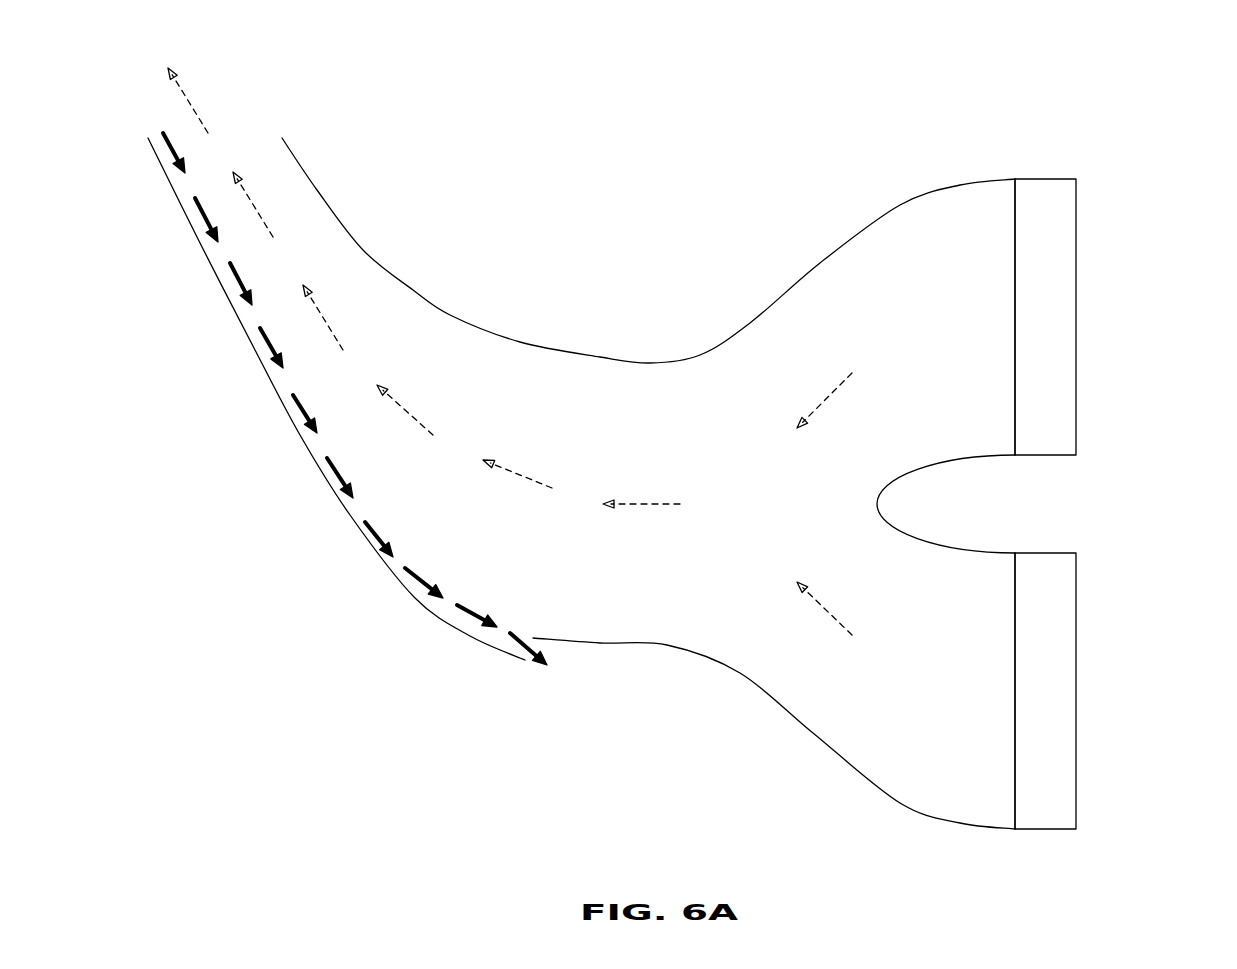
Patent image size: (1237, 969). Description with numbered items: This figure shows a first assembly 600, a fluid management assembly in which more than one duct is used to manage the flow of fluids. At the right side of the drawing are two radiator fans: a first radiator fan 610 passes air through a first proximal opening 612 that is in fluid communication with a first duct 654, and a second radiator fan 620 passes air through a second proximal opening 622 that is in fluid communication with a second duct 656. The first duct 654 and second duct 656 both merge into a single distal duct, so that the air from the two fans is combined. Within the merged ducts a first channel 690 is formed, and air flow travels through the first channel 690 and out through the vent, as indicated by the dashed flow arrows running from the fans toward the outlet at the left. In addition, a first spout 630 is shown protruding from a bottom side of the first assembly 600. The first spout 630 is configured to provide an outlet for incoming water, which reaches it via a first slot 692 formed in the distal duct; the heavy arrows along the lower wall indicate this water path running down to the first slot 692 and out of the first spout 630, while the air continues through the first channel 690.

The first assembly 600 is at (492, 110).
The first duct 654 is at (937, 177).
The second duct 656 is at (662, 678).
The first radiator fan 610 is at (1076, 305).
The first proximal opening 612 is at (1015, 258).
The second radiator fan 620 is at (1076, 703).
The second proximal opening 622 is at (1015, 750).
The first spout 630 is at (508, 658).
The first channel 690 is at (500, 425).
The first slot 692 is at (515, 620).